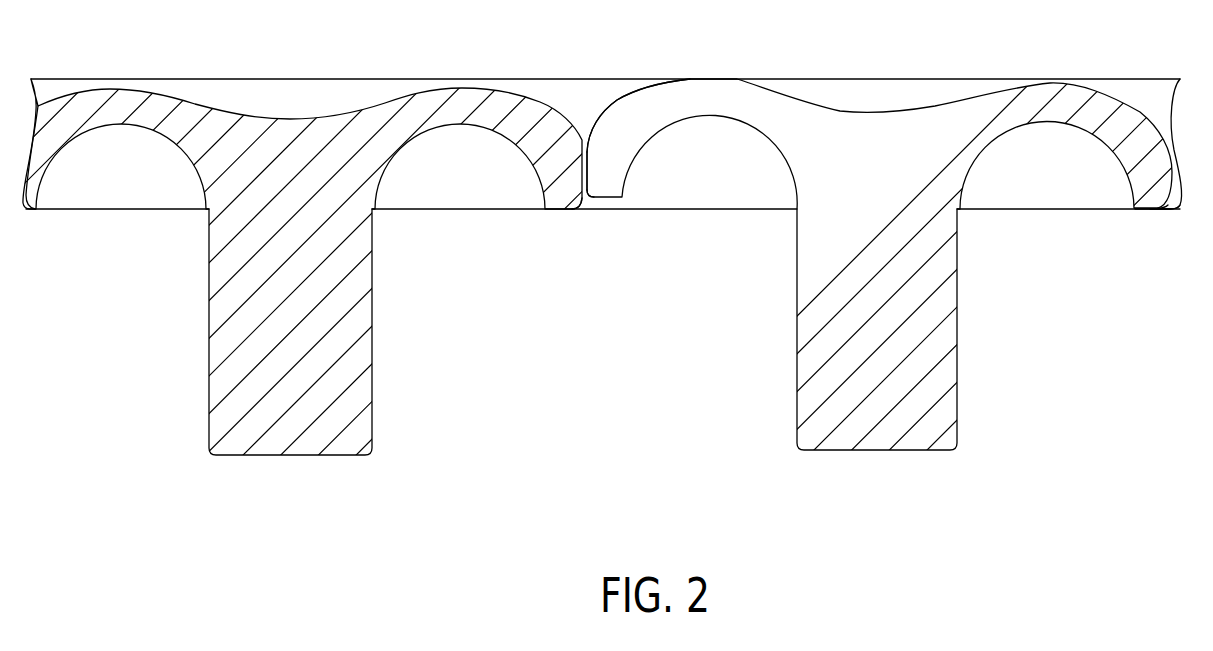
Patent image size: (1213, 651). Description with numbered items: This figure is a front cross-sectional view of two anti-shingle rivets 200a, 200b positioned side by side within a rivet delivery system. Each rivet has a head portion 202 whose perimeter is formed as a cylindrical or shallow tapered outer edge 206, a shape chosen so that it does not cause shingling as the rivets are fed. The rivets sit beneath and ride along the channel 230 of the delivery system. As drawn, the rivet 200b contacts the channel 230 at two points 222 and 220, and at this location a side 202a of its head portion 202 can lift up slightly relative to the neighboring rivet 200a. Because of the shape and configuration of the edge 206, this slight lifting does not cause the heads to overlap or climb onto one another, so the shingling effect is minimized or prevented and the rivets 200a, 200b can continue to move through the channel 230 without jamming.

The anti-shingle rivet 200a is at (218, 368).
The anti-shingle rivet 200b is at (815, 320).
The head portion 202 is at (152, 110).
The side of the head portion 202a is at (657, 100).
The outer edge 206 is at (583, 195).
The contact point 220 is at (588, 190).
The contact point 222 is at (1150, 210).
The channel 230 is at (552, 77).